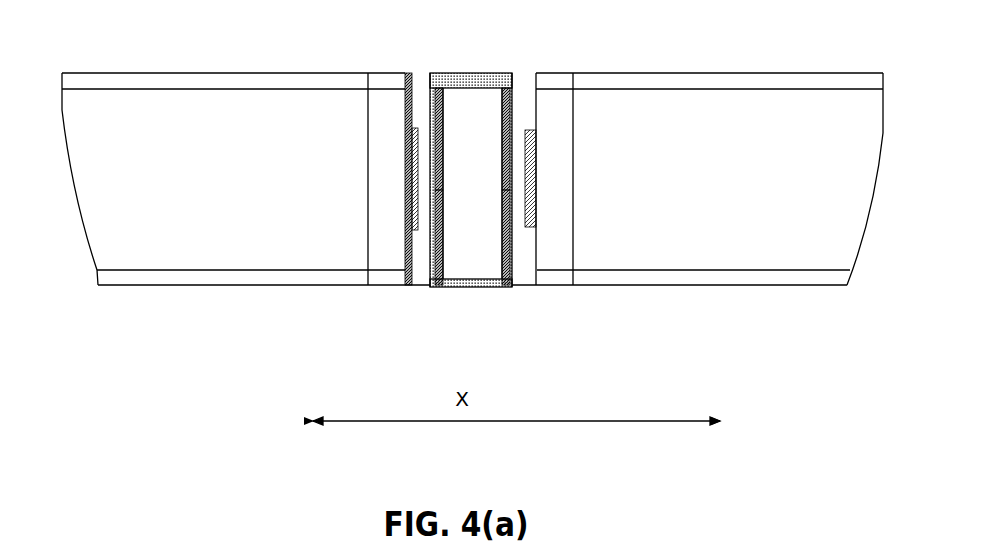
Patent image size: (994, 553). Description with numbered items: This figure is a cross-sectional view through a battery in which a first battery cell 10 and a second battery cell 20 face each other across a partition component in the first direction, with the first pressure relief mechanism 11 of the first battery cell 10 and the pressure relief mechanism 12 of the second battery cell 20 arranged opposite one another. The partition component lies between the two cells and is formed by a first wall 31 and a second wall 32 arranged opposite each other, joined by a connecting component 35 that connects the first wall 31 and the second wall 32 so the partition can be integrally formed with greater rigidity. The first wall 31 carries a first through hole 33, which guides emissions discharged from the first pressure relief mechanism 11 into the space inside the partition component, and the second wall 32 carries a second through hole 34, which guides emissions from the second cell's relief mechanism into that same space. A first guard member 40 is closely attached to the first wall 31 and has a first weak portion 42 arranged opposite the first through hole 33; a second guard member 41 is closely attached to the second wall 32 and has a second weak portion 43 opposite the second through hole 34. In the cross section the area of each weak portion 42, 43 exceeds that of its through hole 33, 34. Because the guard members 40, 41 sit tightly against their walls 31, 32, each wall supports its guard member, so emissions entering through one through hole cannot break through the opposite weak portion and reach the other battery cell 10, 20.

The first battery cell 10 is at (137, 238).
The second battery cell 20 is at (830, 233).
The first pressure relief mechanism 11 is at (410, 193).
The second pressure relief mechanism 12 is at (530, 187).
The first wall 31 is at (437, 242).
The second wall 32 is at (508, 243).
The first through hole 33 is at (438, 180).
The second through hole 34 is at (512, 205).
The connecting component 35 is at (468, 72).
The first guard member 40 is at (436, 243).
The second guard member 41 is at (503, 243).
The first weak portion 42 is at (440, 180).
The second weak portion 43 is at (506, 175).